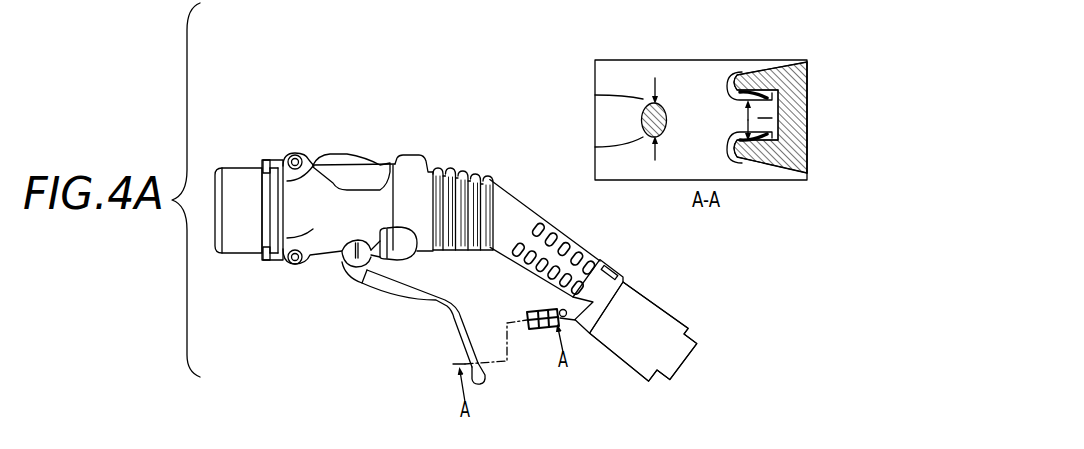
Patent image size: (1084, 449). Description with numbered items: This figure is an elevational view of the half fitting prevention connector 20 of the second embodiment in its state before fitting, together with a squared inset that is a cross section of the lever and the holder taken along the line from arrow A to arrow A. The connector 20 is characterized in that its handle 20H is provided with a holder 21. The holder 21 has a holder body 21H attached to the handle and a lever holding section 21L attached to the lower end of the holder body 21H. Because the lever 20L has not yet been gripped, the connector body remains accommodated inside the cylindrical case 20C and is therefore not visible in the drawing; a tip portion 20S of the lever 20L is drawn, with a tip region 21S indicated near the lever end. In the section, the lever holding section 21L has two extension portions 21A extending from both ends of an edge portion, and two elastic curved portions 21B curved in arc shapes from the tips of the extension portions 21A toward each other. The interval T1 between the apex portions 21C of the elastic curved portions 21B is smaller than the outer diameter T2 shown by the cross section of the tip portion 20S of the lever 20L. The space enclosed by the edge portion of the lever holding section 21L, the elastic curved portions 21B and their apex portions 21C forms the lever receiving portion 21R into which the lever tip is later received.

The half fitting prevention connector 20 is at (520, 140).
The cylindrical case 20C is at (380, 163).
The handle 20H is at (523, 205).
The lever 20L is at (448, 320).
The tip portion of the lever 20S is at (667, 113).
The holder 21 is at (600, 258).
The holder body 21H is at (628, 295).
The lever holding section 21L is at (535, 331).
The lever tip 21S is at (482, 384).
The extension portions 21A is at (750, 74).
The elastic curved portions 21B is at (807, 86).
The apex portions 21C is at (780, 97).
The lever receiving portion 21R is at (807, 133).
The interval between apex portions T1 is at (749, 120).
The outer diameter of the lever tip portion T2 is at (668, 120).